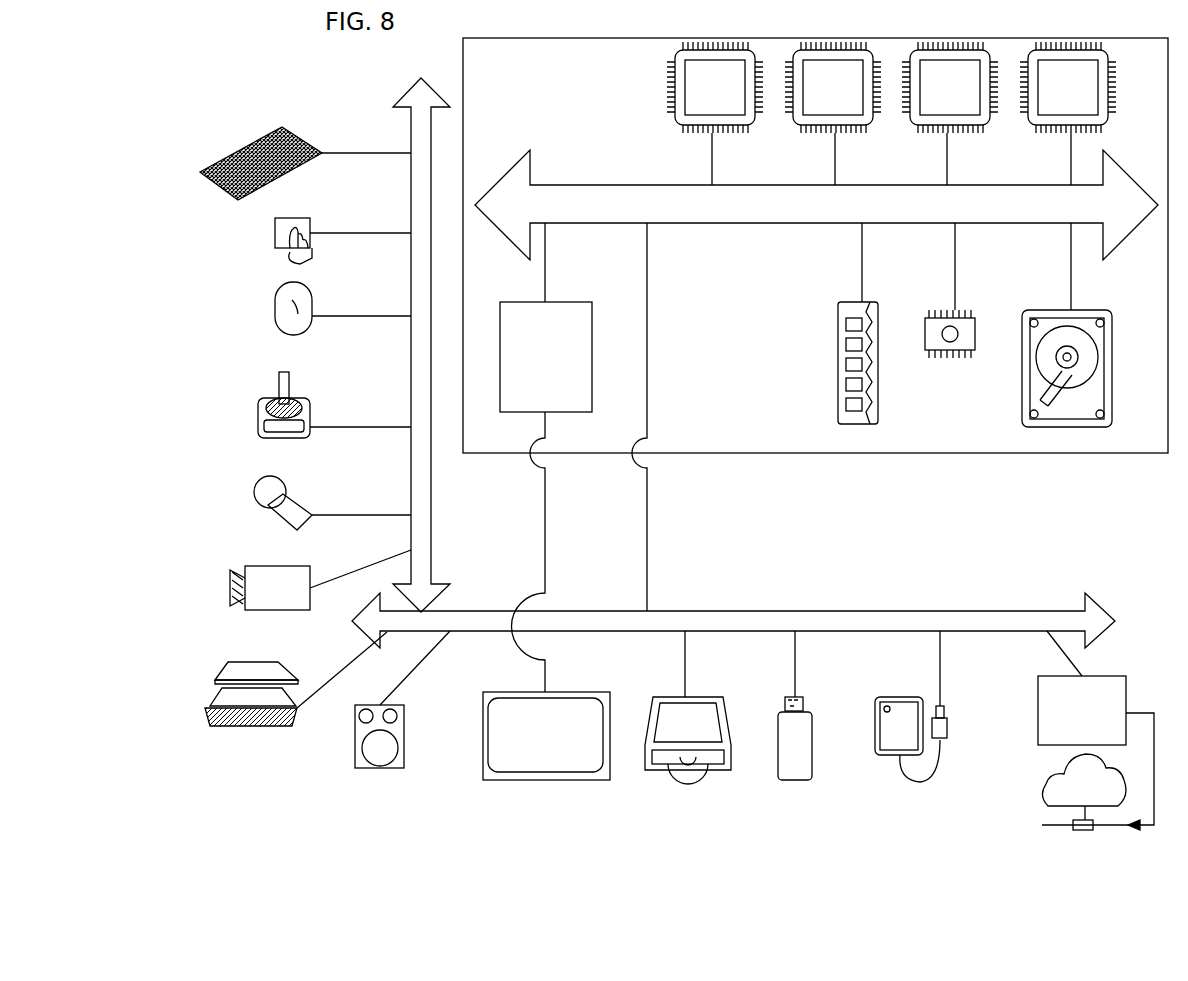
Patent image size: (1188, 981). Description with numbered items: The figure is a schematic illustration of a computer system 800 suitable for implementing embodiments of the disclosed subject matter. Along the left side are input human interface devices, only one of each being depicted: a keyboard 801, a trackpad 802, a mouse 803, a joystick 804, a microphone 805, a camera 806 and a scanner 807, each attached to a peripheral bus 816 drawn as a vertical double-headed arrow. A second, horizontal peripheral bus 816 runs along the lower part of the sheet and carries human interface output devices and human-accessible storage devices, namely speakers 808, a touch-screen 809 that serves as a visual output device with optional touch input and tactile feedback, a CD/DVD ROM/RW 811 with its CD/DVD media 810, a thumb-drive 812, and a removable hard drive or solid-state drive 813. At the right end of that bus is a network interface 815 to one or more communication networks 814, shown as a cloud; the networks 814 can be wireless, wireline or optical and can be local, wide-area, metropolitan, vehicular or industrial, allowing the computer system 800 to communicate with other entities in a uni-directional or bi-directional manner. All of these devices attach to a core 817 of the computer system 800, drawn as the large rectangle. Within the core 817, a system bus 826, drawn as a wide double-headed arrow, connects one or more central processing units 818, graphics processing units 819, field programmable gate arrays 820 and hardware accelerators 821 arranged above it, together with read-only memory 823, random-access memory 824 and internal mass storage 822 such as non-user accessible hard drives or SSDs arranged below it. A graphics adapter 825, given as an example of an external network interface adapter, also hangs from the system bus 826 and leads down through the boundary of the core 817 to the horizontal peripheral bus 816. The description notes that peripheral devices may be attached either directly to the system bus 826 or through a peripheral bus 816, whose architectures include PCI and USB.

The computer system 800 is at (224, 64).
The keyboard 801 is at (205, 180).
The trackpad 802 is at (268, 243).
The mouse 803 is at (268, 310).
The joystick 804 is at (258, 430).
The microphone 805 is at (255, 490).
The camera 806 is at (232, 592).
The scanner 807 is at (205, 712).
The speakers 808 is at (380, 768).
The touch-screen 809 is at (545, 780).
The CD/DVD media 810 is at (668, 772).
The CD/DVD ROM/RW 811 is at (718, 775).
The thumb-drive 812 is at (795, 780).
The removable hard drive or solid-state drive 813 is at (880, 757).
The communication networks 814 is at (1046, 800).
The network interface 815 is at (1096, 730).
The peripheral bus 816 is at (410, 110).
The core 817 is at (810, 455).
The central processing unit 818 is at (715, 113).
The graphics processing unit 819 is at (833, 113).
The field programmable gate array 820 is at (950, 113).
The hardware accelerator 821 is at (1068, 113).
The internal mass storage 822 is at (1032, 312).
The read-only memory 823 is at (940, 360).
The random-access memory 824 is at (838, 355).
The graphics adapter 825 is at (546, 457).
The system bus 826 is at (816, 205).